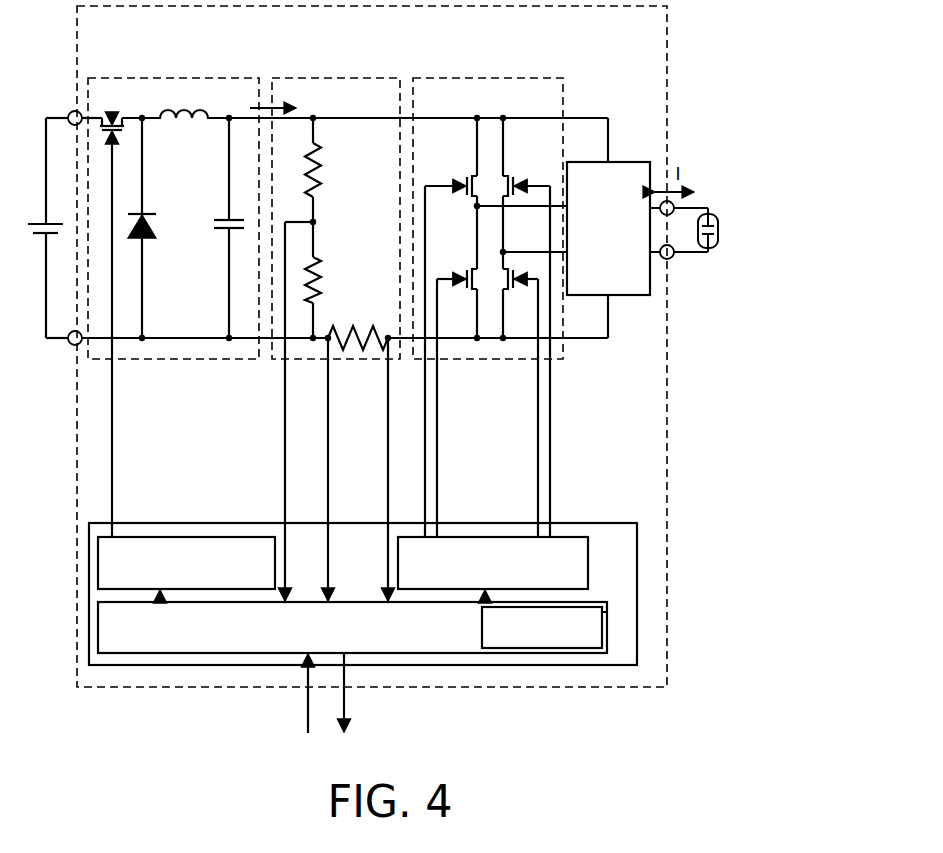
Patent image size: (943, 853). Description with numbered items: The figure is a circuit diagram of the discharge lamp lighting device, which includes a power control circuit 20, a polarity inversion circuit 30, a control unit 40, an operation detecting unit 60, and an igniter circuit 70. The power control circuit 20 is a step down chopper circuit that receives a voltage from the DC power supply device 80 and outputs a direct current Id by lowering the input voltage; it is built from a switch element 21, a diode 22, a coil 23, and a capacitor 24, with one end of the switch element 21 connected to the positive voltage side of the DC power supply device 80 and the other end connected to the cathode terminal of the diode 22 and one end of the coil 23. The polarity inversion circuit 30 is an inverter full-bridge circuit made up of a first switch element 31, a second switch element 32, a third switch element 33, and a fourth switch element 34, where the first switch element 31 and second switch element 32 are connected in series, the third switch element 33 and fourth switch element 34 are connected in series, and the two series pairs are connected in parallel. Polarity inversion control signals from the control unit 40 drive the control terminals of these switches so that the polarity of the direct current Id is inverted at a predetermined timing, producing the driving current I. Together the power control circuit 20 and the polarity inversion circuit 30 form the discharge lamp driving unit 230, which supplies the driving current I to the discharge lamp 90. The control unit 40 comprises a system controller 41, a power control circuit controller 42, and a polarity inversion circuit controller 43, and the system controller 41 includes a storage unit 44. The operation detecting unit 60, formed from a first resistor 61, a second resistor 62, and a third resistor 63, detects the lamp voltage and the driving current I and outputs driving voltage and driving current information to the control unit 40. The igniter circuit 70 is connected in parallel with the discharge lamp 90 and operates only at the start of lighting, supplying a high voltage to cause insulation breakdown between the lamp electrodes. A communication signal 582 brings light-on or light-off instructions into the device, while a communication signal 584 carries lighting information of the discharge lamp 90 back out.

The power control circuit 20 is at (208, 78).
The switch element 21 is at (112, 314).
The diode 22 is at (150, 228).
The coil 23 is at (193, 105).
The capacitor 24 is at (235, 228).
The polarity inversion circuit 30 is at (497, 78).
The first switch element 31 is at (451, 348).
The second switch element 32 is at (457, 394).
The third switch element 33 is at (526, 348).
The fourth switch element 34 is at (520, 394).
The control unit 40 is at (453, 523).
The system controller 41 is at (589, 607).
The power control circuit controller 42 is at (204, 537).
The polarity inversion circuit controller 43 is at (562, 537).
The storage unit 44 is at (606, 612).
The operation detecting unit 60 is at (350, 362).
The first resistor 61 is at (330, 187).
The second resistor 62 is at (330, 297).
The third resistor 63 is at (358, 323).
The igniter circuit 70 is at (634, 161).
The DC power supply device 80 is at (40, 222).
The discharge lamp 90 is at (712, 213).
The discharge lamp driving unit 230 is at (528, 38).
The communication signal 582 is at (305, 709).
The communication signal 584 is at (347, 709).